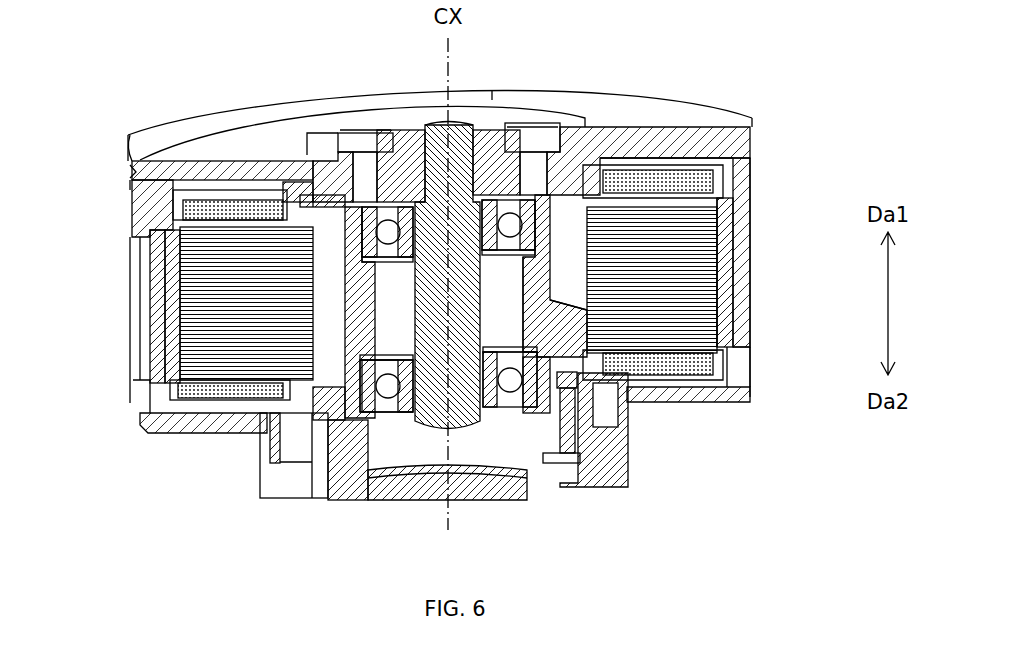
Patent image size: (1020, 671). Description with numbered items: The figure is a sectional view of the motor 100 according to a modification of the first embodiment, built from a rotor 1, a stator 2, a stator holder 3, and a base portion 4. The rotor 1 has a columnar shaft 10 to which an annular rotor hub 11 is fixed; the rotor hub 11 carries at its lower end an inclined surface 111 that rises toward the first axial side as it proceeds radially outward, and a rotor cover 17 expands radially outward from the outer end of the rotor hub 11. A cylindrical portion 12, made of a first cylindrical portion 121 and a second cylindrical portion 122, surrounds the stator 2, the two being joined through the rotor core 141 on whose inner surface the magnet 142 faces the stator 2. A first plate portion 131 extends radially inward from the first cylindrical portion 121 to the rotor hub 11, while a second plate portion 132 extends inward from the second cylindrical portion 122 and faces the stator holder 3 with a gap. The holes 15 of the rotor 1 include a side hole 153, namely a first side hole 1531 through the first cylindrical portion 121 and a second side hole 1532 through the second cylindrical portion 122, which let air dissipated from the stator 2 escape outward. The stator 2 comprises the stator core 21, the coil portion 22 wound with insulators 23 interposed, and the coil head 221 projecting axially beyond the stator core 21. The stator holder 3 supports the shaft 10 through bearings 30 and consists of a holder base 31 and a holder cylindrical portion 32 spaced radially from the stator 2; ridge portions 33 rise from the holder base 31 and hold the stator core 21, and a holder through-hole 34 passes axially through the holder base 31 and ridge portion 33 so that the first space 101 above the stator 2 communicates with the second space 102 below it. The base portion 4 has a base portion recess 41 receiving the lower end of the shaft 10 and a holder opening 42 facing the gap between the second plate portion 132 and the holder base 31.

The motor 100 is at (91, 70).
The rotor 1 is at (553, 78).
The shaft 10 is at (437, 133).
The rotor hub 11 is at (408, 150).
The inclined surface 111 is at (325, 195).
The cylindrical portion 12 is at (62, 205).
The first cylindrical portion 121 is at (148, 225).
The second cylindrical portion 122 is at (148, 356).
The first plate portion 131 is at (640, 156).
The second plate portion 132 is at (700, 402).
The rotor core 141 is at (735, 281).
The magnet 142 is at (725, 256).
The hole 15 is at (133, 161).
The side hole 153 is at (120, 190).
The first side hole 1531 is at (118, 174).
The second side hole 1532 is at (138, 406).
The rotor cover 17 is at (492, 98).
The first space 101 is at (229, 180).
The second space 102 is at (219, 428).
The stator 2 is at (745, 160).
The stator core 21 is at (690, 231).
The coil portion 22 is at (735, 190).
The coil head 221 is at (674, 172).
The insulator 23 is at (720, 206).
The stator holder 3 is at (818, 303).
The bearing 30 is at (346, 205).
The holder base 31 is at (575, 318).
The holder cylindrical portion 32 is at (543, 248).
The ridge portion 33 is at (305, 195).
The holder through-hole 34 is at (332, 418).
The base portion 4 is at (340, 482).
The base portion recess 41 is at (424, 483).
The holder opening 42 is at (290, 498).